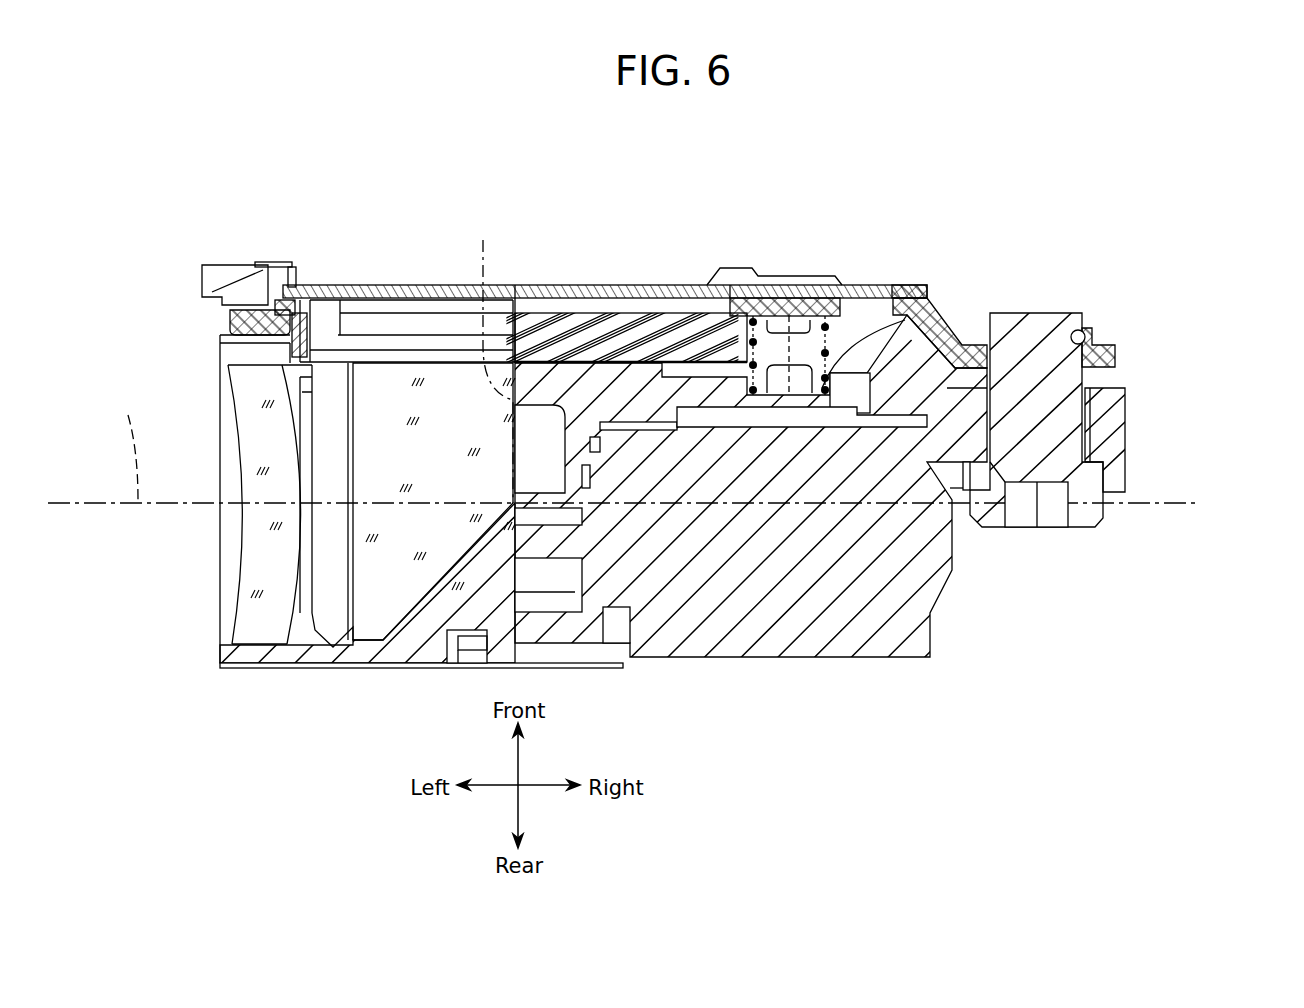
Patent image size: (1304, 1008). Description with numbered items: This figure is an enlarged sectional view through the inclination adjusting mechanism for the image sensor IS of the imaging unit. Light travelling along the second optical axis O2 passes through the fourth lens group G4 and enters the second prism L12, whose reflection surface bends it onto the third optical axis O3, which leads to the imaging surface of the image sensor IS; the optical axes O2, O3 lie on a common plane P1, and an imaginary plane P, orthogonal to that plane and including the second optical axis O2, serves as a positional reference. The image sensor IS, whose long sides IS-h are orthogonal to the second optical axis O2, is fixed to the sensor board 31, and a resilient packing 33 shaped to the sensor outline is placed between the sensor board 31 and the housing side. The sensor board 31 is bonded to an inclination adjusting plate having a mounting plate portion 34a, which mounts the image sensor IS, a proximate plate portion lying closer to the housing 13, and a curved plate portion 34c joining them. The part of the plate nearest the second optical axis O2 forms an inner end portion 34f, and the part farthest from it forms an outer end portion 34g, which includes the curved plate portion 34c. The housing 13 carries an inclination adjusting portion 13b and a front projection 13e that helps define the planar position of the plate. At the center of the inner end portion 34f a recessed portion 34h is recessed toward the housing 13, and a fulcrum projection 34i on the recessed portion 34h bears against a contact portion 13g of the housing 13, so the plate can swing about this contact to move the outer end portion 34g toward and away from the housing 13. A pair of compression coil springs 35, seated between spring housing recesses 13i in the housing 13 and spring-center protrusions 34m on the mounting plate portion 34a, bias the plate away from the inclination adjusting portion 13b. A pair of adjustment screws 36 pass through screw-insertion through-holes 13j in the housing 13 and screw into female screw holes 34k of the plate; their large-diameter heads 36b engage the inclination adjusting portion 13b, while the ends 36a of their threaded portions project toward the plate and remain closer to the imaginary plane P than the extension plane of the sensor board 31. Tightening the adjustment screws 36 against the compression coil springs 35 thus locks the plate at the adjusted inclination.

The imaginary plane P is at (620, 503).
The common plane P1 is at (670, 182).
The second optical axis O2 is at (120, 443).
The third optical axis O3 is at (491, 357).
The second prism L12 is at (393, 450).
The fourth lens group G4 is at (263, 608).
The image sensor IS is at (388, 322).
The long sides IS-h is at (291, 305).
The sensor board 31 is at (528, 287).
The packing 33 is at (312, 333).
The housing 13 is at (754, 497).
The inclination adjusting portion 13b is at (1133, 400).
The front projection 13e is at (817, 280).
The contact portion 13g is at (232, 325).
The spring housing recesses 13i is at (835, 330).
The screw-insertion through-holes 13j is at (1082, 422).
The mounting plate portion 34a is at (775, 300).
The curved plate portion 34c is at (930, 330).
The inner end portion 34f is at (288, 300).
The outer end portion 34g is at (800, 236).
The recessed portion 34h is at (272, 303).
The fulcrum projection 34i is at (243, 305).
The female screw holes 34k is at (1082, 331).
The spring-center protrusions 34m is at (848, 297).
The compression coil springs 35 is at (903, 320).
The adjustment screws 36 is at (937, 441).
The ends of threaded portions 36a is at (1053, 317).
The large-diameter head 36b is at (993, 522).